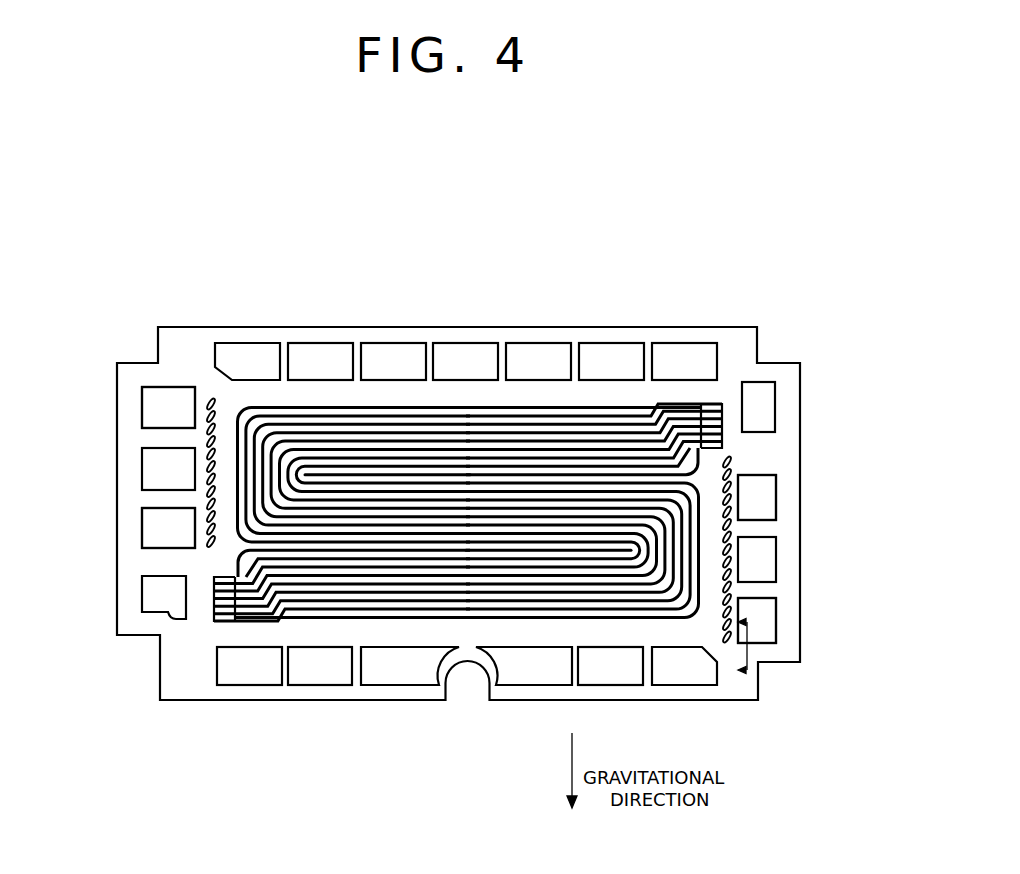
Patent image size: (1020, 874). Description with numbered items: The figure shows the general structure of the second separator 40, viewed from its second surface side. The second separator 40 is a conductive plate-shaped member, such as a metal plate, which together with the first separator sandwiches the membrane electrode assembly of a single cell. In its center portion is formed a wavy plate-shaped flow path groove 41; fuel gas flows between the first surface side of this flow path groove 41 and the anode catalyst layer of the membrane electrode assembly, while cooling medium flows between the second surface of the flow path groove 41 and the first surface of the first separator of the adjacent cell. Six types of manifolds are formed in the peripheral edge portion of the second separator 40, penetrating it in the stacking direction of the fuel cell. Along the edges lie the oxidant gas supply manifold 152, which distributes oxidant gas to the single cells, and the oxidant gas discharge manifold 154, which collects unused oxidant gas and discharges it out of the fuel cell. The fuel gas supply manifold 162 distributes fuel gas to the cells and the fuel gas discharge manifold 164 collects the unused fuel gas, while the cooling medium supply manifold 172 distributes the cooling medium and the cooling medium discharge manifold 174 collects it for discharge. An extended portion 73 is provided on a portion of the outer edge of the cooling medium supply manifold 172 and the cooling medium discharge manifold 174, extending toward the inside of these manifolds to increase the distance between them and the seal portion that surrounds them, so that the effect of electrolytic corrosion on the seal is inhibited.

The second separator 40 is at (697, 325).
The flow path groove 41 is at (317, 595).
The extended portion 73 is at (193, 394).
The oxidant gas supply manifold 152 is at (685, 672).
The oxidant gas discharge manifold 154 is at (687, 350).
The fuel gas supply manifold 162 is at (762, 395).
The fuel gas discharge manifold 164 is at (163, 603).
The cooling medium supply manifold 172 is at (762, 513).
The cooling medium discharge manifold 174 is at (160, 522).